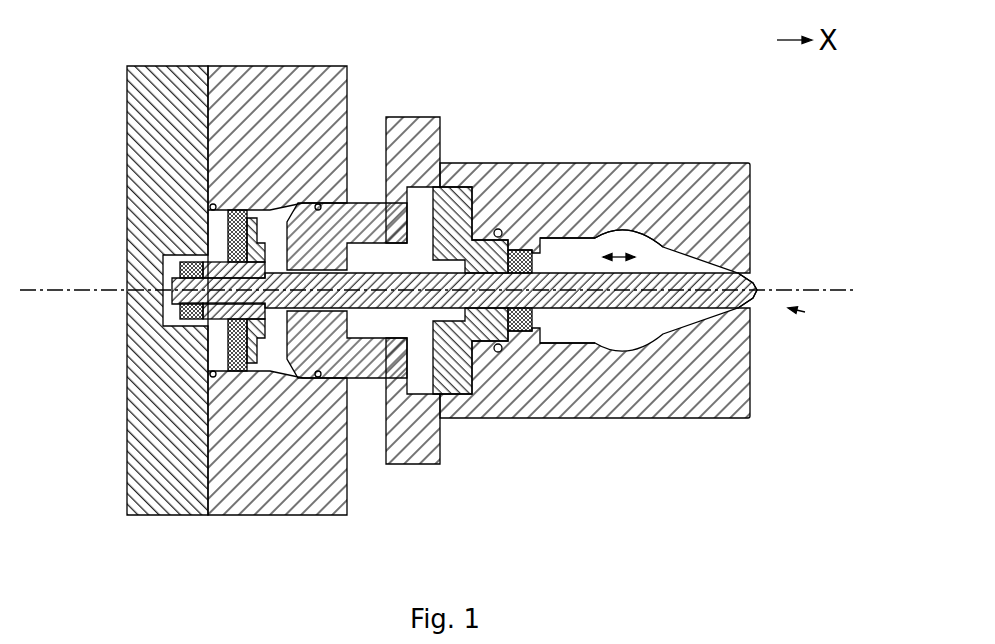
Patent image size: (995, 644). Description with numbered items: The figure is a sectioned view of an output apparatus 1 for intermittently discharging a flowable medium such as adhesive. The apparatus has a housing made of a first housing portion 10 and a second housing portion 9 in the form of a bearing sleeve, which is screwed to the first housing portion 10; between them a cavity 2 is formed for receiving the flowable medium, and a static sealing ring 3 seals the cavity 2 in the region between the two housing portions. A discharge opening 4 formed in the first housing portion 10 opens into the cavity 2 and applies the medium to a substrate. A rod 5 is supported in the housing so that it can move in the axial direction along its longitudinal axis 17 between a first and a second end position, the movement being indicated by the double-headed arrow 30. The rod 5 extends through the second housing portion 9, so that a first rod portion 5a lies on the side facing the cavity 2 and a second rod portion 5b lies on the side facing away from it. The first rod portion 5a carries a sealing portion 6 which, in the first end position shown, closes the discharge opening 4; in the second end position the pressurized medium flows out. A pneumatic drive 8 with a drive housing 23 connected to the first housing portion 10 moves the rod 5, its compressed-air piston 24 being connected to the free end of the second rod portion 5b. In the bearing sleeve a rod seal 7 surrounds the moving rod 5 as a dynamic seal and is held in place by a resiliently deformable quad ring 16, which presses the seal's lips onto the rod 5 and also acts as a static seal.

The output apparatus 1 is at (631, 63).
The cavity 2 is at (627, 327).
The sealing ring 3 is at (497, 229).
The discharge opening 4 is at (806, 313).
The rod 5 is at (564, 326).
The first rod portion 5a is at (693, 277).
The second rod portion 5b is at (388, 340).
The sealing portion 6 is at (740, 307).
The rod seal 7 is at (525, 247).
The pneumatic drive 8 is at (110, 140).
The second housing portion 9 is at (447, 370).
The first housing portion 10 is at (730, 383).
The quad ring 16 is at (530, 343).
The longitudinal axis 17 is at (830, 290).
The drive housing 23 is at (368, 352).
The piston 24 is at (230, 322).
The double-headed arrow 30 is at (624, 255).